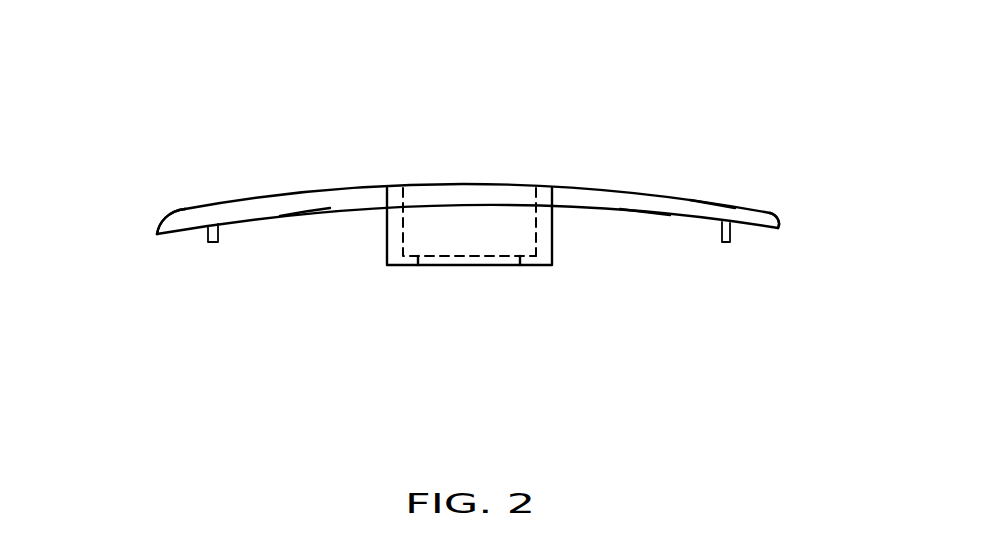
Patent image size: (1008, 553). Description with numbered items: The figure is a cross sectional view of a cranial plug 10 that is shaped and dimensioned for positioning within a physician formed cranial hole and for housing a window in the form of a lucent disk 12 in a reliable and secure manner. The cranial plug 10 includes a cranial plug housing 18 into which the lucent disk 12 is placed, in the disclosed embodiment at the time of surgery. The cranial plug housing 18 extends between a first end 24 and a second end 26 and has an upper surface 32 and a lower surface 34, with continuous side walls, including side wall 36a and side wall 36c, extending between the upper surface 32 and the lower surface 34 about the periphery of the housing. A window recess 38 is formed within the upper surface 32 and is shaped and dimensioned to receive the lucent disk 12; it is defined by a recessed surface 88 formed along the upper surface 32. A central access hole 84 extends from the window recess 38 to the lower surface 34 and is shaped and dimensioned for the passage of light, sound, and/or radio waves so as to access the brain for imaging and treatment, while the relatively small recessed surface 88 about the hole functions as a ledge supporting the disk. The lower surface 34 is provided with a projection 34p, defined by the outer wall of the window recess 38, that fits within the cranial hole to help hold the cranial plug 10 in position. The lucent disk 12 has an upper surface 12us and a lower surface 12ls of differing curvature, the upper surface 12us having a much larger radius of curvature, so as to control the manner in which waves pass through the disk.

The cranial plug 10 is at (267, 133).
The lucent disk 12 is at (442, 215).
The upper surface of lucent disk 12us is at (507, 185).
The lower surface of lucent disk 12ls is at (490, 258).
The cranial plug housing 18 is at (306, 217).
The first end 24 is at (157, 232).
The second end 26 is at (775, 217).
The upper surface 32 is at (713, 204).
The lower surface 34 is at (645, 216).
The projection 34p is at (212, 243).
The side wall 36a is at (163, 231).
The side wall 36c is at (783, 233).
The window recess 38 is at (537, 221).
The central access hole 84 is at (443, 267).
The recessed surface 88 is at (411, 254).